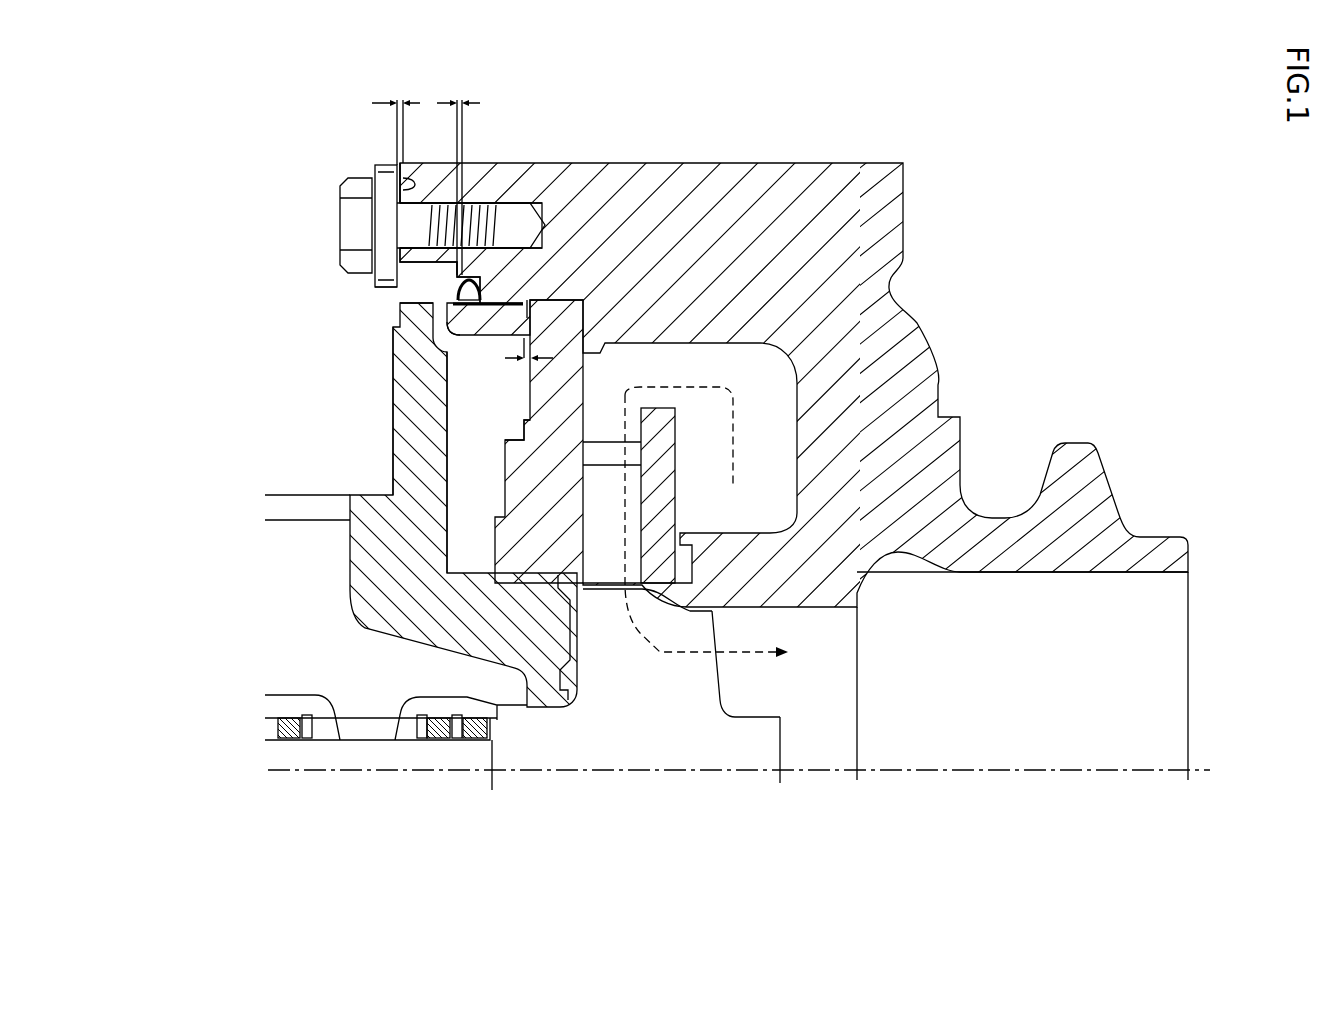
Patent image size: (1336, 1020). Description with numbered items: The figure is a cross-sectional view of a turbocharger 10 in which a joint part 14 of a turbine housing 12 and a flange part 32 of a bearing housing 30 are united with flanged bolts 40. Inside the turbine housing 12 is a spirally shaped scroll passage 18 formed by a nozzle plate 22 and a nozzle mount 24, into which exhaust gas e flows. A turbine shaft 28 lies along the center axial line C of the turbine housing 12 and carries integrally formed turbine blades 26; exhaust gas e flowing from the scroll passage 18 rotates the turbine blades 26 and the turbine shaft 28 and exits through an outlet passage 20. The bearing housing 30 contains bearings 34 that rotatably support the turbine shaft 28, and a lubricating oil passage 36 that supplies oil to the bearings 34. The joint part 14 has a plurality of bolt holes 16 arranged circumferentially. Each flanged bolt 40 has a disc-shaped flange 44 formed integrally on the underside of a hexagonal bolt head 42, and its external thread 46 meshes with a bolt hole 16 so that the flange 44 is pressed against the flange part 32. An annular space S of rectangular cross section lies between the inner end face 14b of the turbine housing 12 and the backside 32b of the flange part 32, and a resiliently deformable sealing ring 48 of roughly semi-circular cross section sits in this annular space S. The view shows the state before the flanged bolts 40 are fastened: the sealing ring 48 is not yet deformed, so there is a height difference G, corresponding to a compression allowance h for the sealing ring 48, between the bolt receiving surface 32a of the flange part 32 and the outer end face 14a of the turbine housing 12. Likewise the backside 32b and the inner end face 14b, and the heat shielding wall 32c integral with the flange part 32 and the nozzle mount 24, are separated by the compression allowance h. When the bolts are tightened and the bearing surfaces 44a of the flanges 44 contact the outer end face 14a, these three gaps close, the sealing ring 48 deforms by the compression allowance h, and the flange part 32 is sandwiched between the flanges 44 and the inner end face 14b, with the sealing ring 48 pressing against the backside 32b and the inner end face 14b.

The turbocharger 10 is at (210, 130).
The turbine housing 12 is at (807, 157).
The joint part 14 is at (468, 162).
The outer end face 14a is at (415, 178).
The inner end face 14b is at (485, 285).
The bolt hole 16 is at (480, 230).
The scroll passage 18 is at (618, 348).
The outlet passage 20 is at (813, 607).
The nozzle plate 22 is at (684, 448).
The nozzle mount 24 is at (523, 420).
The turbine blades 26 is at (715, 696).
The turbine shaft 28 is at (780, 760).
The bearing housing 30 is at (385, 460).
The flange part 32 is at (385, 318).
The bolt receiving surface 32a is at (393, 398).
The backside 32b is at (440, 298).
The heat shielding wall 32c is at (453, 350).
The bearings 34 is at (395, 725).
The lubricating oil passage 36 is at (350, 555).
The flanged bolt 40 is at (330, 215).
The hexagonal bolt head 42 is at (362, 180).
The flange 44 is at (380, 168).
The bearing surface 44a is at (390, 282).
The external thread 46 is at (505, 240).
The sealing ring 48 is at (462, 282).
The height difference G is at (390, 125).
The compression allowance h is at (495, 223).
The annular space S is at (462, 300).
The exhaust gas e is at (706, 535).
The center axial line C is at (965, 768).